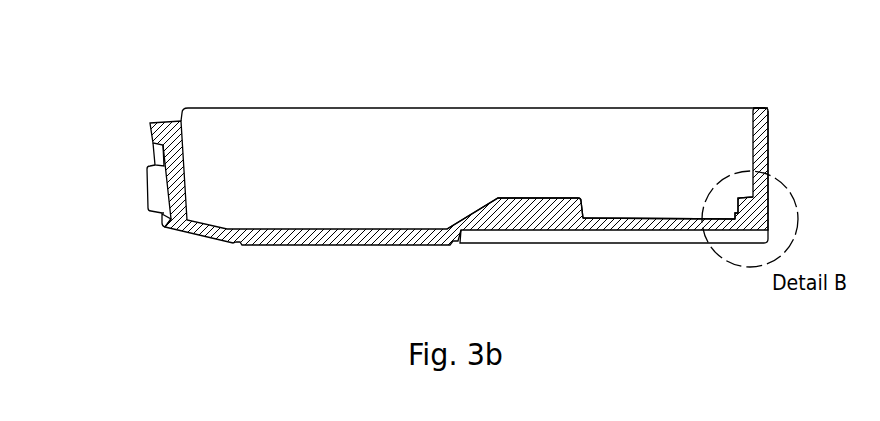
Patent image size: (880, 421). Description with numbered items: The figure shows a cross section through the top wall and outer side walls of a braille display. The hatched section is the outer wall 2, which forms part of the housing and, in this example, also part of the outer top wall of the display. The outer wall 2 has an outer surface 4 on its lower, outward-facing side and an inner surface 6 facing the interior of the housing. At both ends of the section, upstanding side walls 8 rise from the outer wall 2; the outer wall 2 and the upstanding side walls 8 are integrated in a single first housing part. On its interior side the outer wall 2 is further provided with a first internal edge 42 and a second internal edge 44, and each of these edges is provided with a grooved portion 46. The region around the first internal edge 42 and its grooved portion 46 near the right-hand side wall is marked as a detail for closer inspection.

The outer wall 2 is at (385, 247).
The outer surface 4 is at (318, 247).
The inner surface 6 is at (268, 229).
The upstanding side walls 8 is at (148, 133).
The first internal edge 42 is at (737, 202).
The second internal edge 44 is at (584, 203).
The grooved portion 46 is at (585, 215).